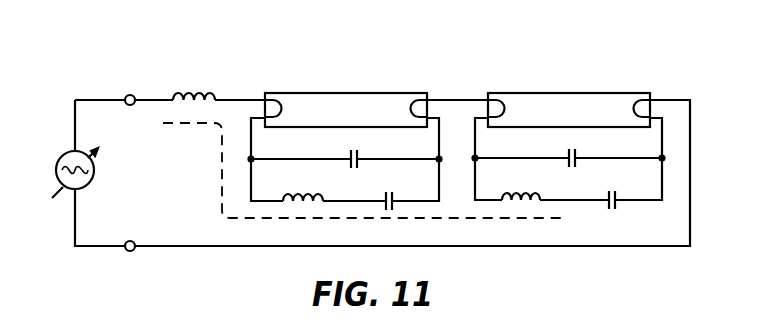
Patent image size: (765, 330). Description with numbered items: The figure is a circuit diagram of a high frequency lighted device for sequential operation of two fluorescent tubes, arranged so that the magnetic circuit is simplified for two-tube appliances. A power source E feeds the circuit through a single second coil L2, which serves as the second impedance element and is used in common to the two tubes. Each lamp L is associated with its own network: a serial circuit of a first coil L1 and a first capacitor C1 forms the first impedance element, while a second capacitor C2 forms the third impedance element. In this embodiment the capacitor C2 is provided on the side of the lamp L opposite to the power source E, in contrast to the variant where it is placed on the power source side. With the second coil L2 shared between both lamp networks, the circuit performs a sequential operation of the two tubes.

The power source E is at (66, 173).
The second coil L2 is at (194, 86).
The lamp L is at (457, 110).
The second capacitor C2 is at (476, 148).
The first coil L1 is at (411, 186).
The first capacitor C1 is at (512, 190).